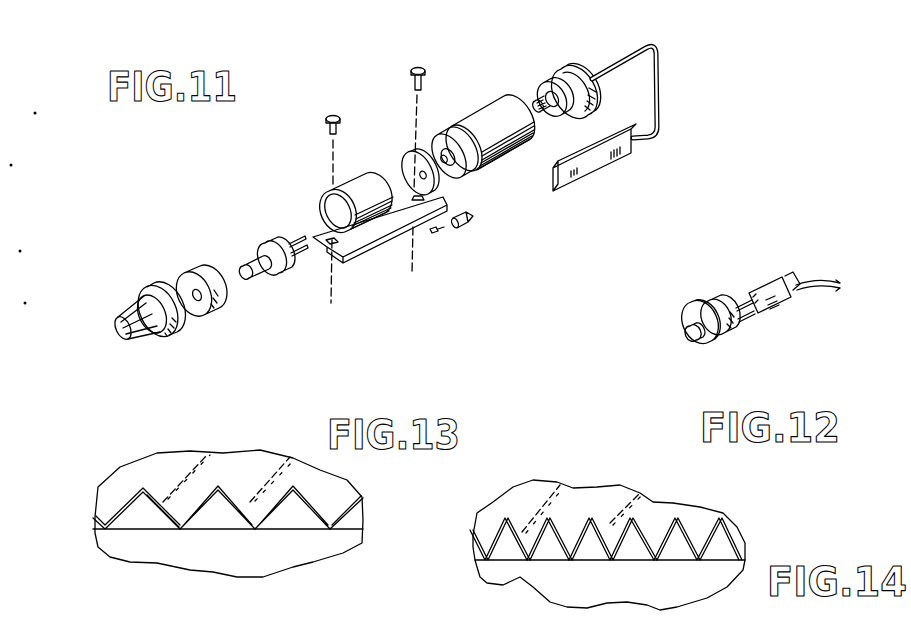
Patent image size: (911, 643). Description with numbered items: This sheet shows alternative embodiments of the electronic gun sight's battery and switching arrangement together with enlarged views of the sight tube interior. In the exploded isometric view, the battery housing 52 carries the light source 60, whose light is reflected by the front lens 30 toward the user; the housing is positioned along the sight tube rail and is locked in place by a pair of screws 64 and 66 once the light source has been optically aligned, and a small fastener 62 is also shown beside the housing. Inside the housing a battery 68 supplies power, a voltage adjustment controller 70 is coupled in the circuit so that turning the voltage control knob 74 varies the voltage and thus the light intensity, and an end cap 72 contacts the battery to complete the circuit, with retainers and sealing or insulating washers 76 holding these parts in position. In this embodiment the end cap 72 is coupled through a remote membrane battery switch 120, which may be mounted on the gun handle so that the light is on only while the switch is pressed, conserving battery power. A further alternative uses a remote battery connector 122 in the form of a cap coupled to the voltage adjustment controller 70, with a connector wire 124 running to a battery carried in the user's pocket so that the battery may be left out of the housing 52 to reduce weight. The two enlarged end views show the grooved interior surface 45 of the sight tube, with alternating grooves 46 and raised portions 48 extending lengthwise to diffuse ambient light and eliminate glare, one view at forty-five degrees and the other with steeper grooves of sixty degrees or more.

In FIG. 13, the front lens 30 is at (223, 453).
In FIG. 14, the front lens 30 is at (582, 497).
In FIG. 13, the grooved interior surface 45 is at (150, 493).
In FIG. 14, the grooved interior surface 45 is at (518, 523).
In FIG. 13, the grooves 46 is at (142, 492).
In FIG. 14, the grooves 46 is at (507, 520).
In FIG. 13, the raised portions 48 is at (290, 490).
In FIG. 14, the raised portions 48 is at (677, 520).
In FIG. 11, the battery housing 52 is at (365, 178).
In FIG. 11, the light source 60 is at (432, 236).
In FIG. 11, the set screw 62 is at (470, 224).
In FIG. 11, the screw 64 is at (418, 62).
In FIG. 11, the screw 66 is at (326, 128).
In FIG. 11, the battery 68 is at (467, 117).
In FIG. 11, the voltage adjustment controller 70 is at (270, 247).
In FIG. 11, the end cap 72 is at (553, 70).
In FIG. 11, the voltage control knob 74 is at (143, 296).
In FIG. 11, the retainers, sealing washers and insulating washers 76 is at (190, 273).
In FIG. 11, the remote membrane battery switch 120 is at (615, 163).
In FIG. 12, the remote battery connector 122 is at (702, 300).
In FIG. 12, the connector wire 124 is at (772, 318).